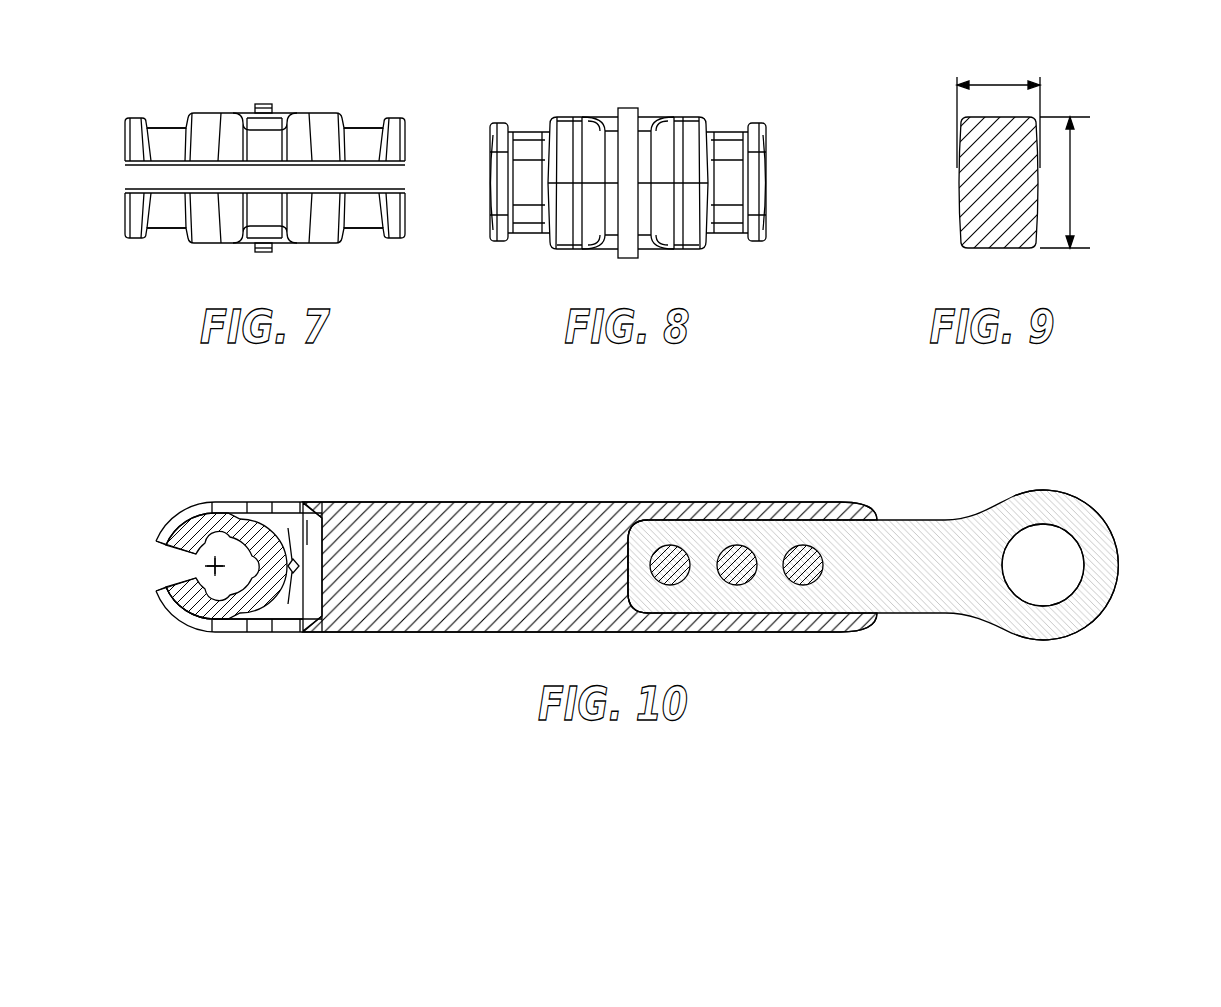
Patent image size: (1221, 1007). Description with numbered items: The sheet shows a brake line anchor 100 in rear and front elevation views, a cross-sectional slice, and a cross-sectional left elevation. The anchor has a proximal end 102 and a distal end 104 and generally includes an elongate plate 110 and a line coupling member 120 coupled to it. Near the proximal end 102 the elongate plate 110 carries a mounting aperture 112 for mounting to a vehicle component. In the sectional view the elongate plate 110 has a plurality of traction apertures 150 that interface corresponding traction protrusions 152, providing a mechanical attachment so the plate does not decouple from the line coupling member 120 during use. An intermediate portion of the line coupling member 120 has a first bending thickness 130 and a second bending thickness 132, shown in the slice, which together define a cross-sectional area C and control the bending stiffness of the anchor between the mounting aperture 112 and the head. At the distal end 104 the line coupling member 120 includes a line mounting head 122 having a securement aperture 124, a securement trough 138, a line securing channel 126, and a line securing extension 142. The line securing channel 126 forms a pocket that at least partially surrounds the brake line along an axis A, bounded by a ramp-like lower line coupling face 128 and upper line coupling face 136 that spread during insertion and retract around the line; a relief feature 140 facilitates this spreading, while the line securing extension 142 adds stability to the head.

In FIG. 7, the brake line anchor 100 is at (108, 108).
In FIG. 8, the brake line anchor 100 is at (768, 100).
In FIG. 10, the brake line anchor 100 is at (860, 432).
In FIG. 10, the proximal end 102 is at (1130, 532).
In FIG. 10, the distal end 104 is at (120, 563).
In FIG. 7, the elongate plate 110 is at (262, 102).
In FIG. 8, the elongate plate 110 is at (632, 104).
In FIG. 10, the elongate plate 110 is at (914, 519).
In FIG. 10, the mounting aperture 112 is at (1054, 525).
In FIG. 7, the line coupling member 120 is at (323, 117).
In FIG. 8, the line coupling member 120 is at (673, 114).
In FIG. 10, the line coupling member 120 is at (524, 501).
In FIG. 7, the line mounting head 122 is at (205, 116).
In FIG. 10, the line mounting head 122 is at (244, 500).
In FIG. 10, the securement aperture 124 is at (309, 533).
In FIG. 7, the line securing channel 126 is at (130, 176).
In FIG. 10, the line securing channel 126 is at (231, 538).
In FIG. 7, the lower line coupling face 128 is at (396, 189).
In FIG. 10, the lower line coupling face 128 is at (165, 585).
In FIG. 9, the first bending thickness 130 is at (998, 85).
In FIG. 9, the second bending thickness 132 is at (1078, 178).
In FIG. 7, the upper line coupling face 136 is at (394, 156).
In FIG. 10, the upper line coupling face 136 is at (165, 548).
In FIG. 7, the securement trough 138 is at (272, 124).
In FIG. 10, the securement trough 138 is at (233, 619).
In FIG. 10, the relief feature 140 is at (283, 592).
In FIG. 7, the line securing extension 142 is at (364, 128).
In FIG. 10, the traction apertures 150 is at (662, 553).
In FIG. 10, the traction protrusions 152 is at (681, 582).
In FIG. 10, the axis A is at (212, 572).
In FIG. 9, the cross-sectional area C is at (960, 192).